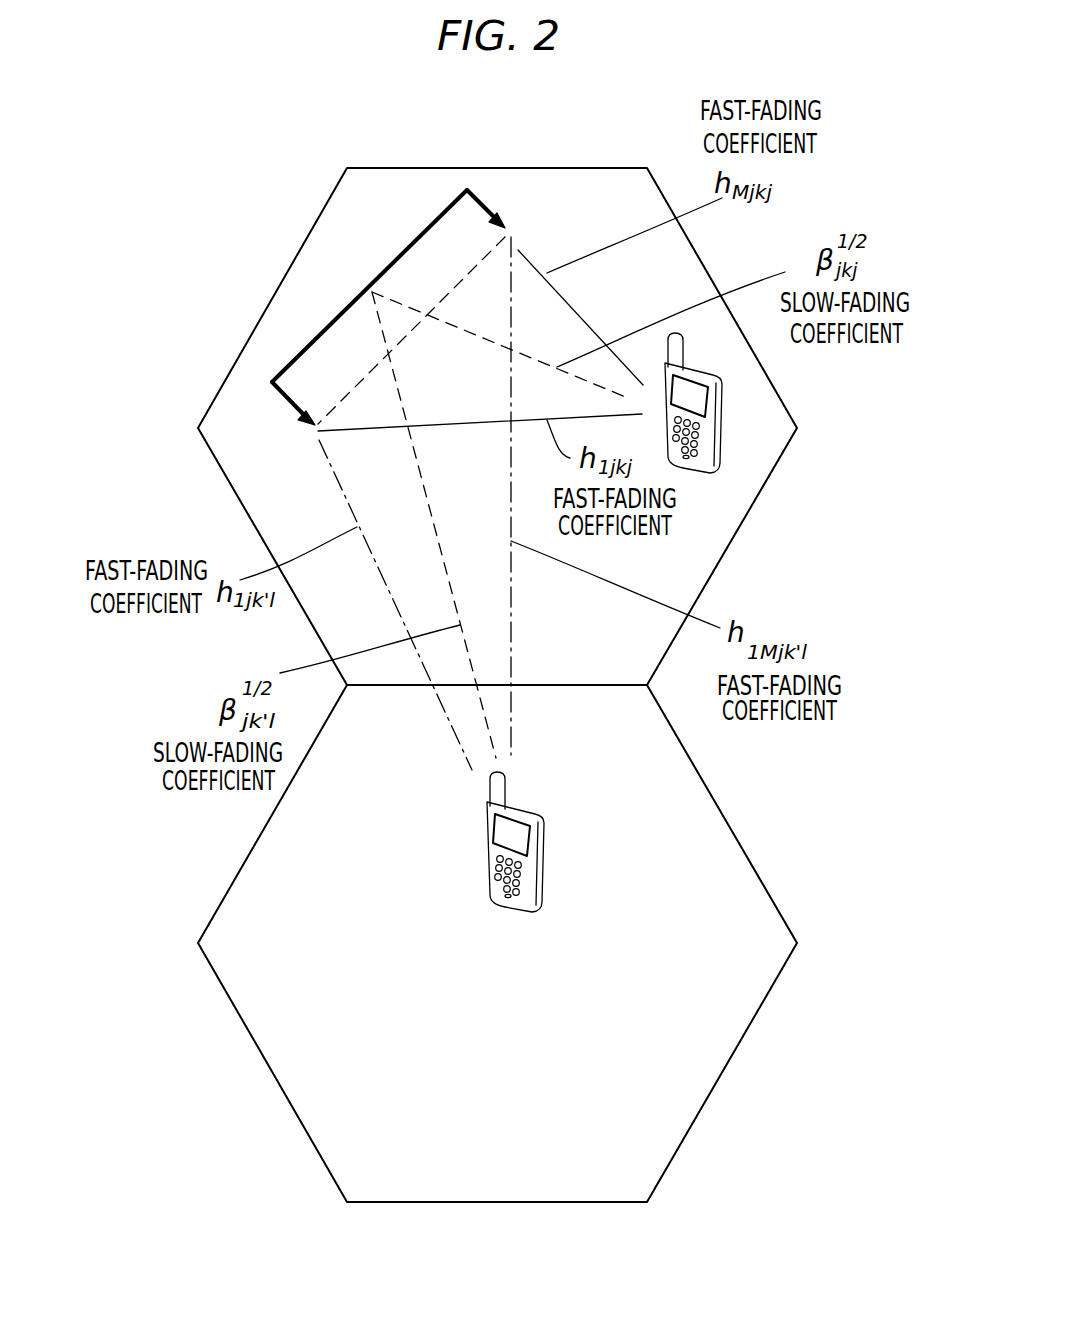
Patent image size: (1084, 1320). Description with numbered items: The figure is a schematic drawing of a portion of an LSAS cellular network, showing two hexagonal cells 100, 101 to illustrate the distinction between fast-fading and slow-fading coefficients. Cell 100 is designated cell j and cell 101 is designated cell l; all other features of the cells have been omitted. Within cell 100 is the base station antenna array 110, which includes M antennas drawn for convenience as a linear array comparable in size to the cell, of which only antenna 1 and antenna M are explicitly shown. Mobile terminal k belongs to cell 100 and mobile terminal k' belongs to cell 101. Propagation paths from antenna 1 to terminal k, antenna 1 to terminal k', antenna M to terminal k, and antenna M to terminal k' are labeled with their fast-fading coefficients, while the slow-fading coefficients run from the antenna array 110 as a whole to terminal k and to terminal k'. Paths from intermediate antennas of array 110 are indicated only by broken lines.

The base station antenna array 110 is at (350, 303).
The cell 100 is at (715, 570).
The cell 101 is at (737, 842).
The antenna 1 is at (290, 403).
The antenna M is at (505, 227).
The mobile terminal k is at (768, 432).
The mobile terminal k' is at (563, 842).